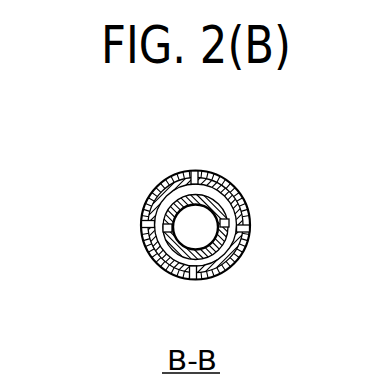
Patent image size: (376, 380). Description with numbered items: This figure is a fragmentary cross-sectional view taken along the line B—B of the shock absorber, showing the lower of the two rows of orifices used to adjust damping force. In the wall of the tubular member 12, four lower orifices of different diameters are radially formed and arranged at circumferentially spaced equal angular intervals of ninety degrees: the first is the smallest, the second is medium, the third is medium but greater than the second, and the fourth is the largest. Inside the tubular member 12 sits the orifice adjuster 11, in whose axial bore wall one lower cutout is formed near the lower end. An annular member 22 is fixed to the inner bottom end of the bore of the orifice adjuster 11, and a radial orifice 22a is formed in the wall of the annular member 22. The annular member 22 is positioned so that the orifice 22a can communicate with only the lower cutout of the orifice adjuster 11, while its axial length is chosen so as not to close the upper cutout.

The orifice adjuster 11 is at (225, 207).
The tubular member 12 is at (226, 186).
The annular member 22 is at (242, 260).
The orifice 22a is at (153, 207).